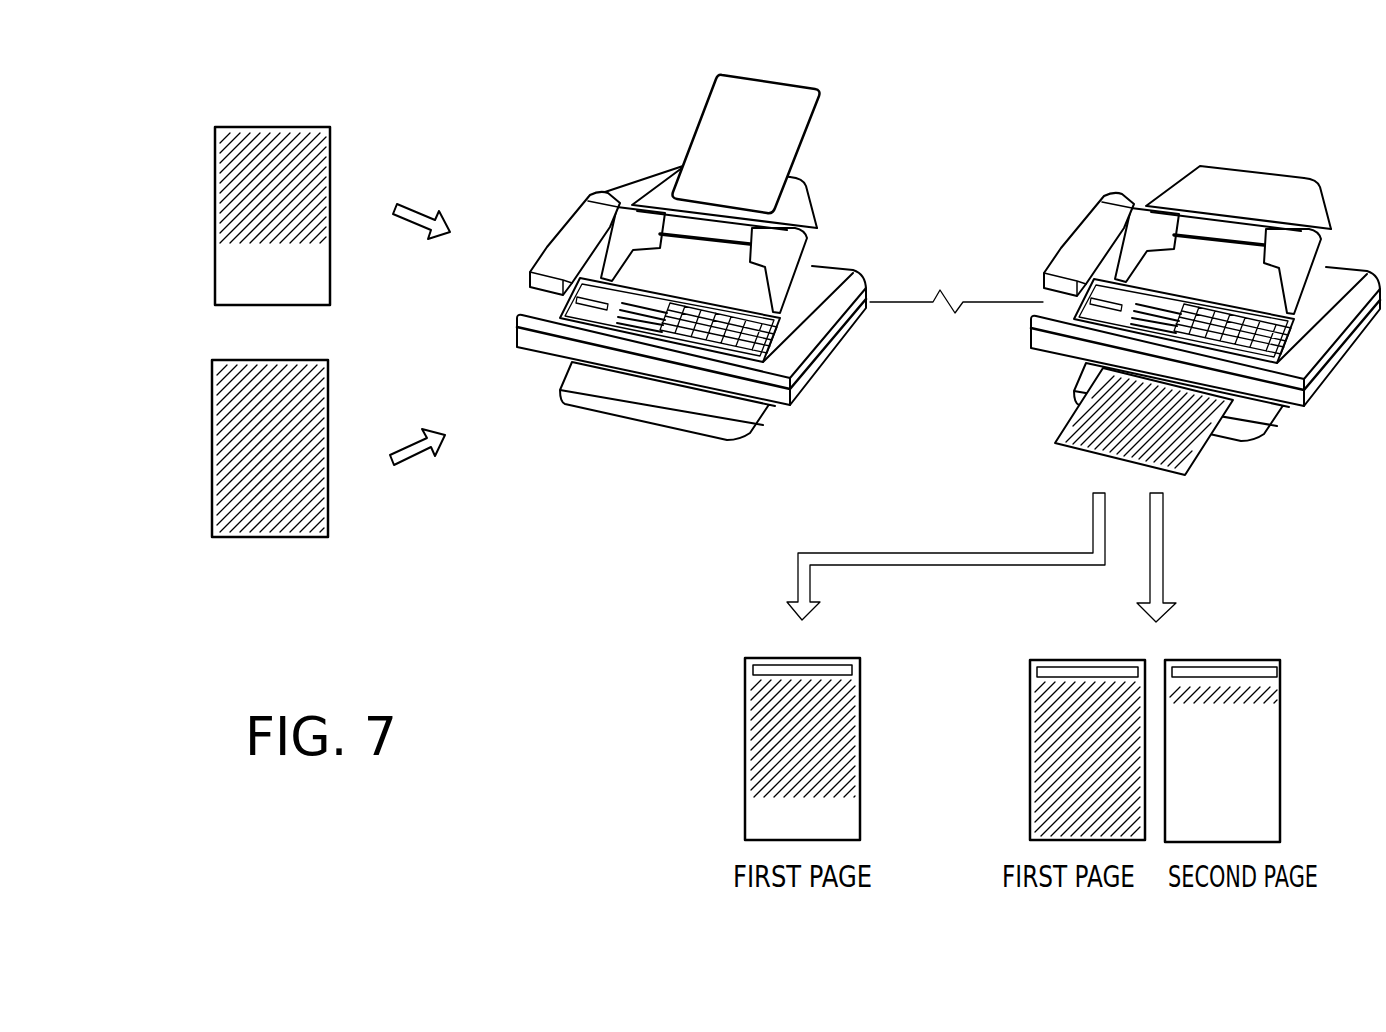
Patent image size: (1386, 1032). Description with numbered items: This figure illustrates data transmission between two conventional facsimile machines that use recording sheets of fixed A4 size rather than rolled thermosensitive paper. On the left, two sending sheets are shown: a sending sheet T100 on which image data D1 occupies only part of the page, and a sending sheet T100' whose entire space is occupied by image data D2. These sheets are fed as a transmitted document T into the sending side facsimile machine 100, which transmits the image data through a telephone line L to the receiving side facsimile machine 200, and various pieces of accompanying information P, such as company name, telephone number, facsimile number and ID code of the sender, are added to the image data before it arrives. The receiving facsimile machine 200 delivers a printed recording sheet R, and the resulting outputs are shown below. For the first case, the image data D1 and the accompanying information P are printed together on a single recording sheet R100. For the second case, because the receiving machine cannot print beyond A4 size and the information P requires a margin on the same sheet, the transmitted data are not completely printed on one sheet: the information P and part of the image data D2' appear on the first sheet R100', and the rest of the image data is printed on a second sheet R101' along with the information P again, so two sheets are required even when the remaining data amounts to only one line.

The sending sheet T100 is at (276, 196).
The sending sheet T100' is at (277, 429).
The image data D1 is at (228, 223).
The image data D2 is at (238, 448).
The transmitted document T is at (713, 128).
The facsimile machine 100 is at (817, 210).
The facsimile machine 200 is at (1252, 168).
The telephone line L is at (920, 306).
The received recording sheet R is at (1180, 443).
The recording sheet R100 is at (823, 728).
The first sheet R100' is at (1087, 729).
The second sheet R101' is at (1222, 730).
The accompanying information P is at (753, 668).
The part of image data D2' is at (1055, 759).